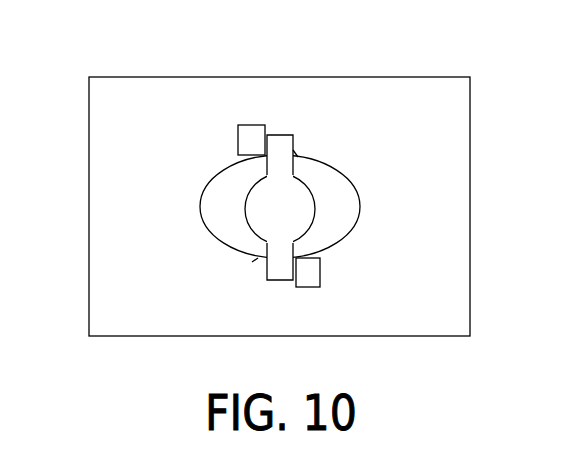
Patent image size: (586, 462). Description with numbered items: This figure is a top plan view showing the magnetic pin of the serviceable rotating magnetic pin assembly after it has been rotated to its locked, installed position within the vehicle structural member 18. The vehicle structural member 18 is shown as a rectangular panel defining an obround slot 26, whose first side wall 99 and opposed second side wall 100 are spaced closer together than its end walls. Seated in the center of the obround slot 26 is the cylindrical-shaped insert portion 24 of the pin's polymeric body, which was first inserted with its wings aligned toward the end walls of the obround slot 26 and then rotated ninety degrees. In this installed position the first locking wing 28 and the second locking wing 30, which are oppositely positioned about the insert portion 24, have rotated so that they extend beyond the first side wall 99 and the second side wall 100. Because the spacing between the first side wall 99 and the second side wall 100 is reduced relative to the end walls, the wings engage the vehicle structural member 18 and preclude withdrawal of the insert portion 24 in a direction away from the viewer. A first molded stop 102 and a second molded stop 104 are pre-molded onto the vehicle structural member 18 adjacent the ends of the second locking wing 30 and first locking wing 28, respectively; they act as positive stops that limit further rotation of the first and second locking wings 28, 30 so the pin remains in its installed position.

The vehicle structural member 18 is at (210, 157).
The cylindrical-shaped insert portion 24 is at (302, 207).
The obround slot 26 is at (348, 243).
The first locking wing 28 is at (278, 270).
The second locking wing 30 is at (278, 145).
The first side wall 99 is at (252, 262).
The second side wall 100 is at (298, 157).
The first molded stop 102 is at (307, 275).
The second molded stop 104 is at (252, 140).